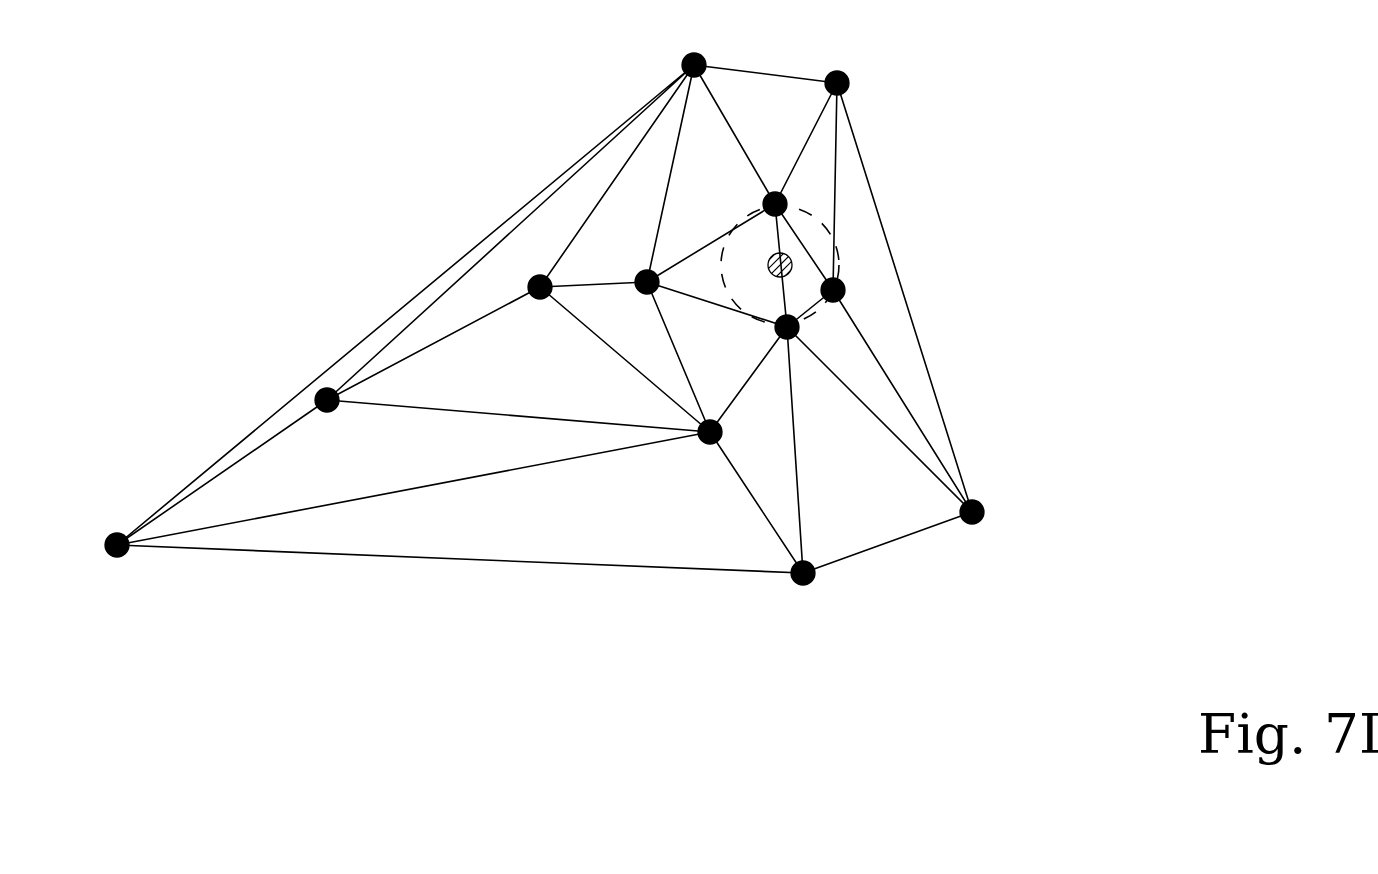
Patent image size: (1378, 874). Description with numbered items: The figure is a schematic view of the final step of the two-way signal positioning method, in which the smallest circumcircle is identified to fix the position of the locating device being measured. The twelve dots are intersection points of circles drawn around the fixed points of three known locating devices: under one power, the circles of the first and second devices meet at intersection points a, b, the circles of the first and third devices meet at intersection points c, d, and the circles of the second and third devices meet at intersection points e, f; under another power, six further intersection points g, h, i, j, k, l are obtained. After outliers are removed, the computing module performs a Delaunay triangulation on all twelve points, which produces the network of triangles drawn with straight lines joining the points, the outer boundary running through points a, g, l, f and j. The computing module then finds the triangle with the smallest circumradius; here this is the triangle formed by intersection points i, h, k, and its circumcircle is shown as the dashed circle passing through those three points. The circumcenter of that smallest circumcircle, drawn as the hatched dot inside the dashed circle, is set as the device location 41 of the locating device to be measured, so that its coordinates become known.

The intersection point a is at (697, 53).
The intersection point b is at (640, 272).
The intersection point c is at (530, 280).
The intersection point d is at (325, 412).
The intersection point e is at (722, 436).
The intersection point f is at (815, 576).
The intersection point g is at (849, 88).
The intersection point h is at (775, 328).
The intersection point i is at (775, 192).
The intersection point j is at (106, 540).
The intersection point k is at (844, 296).
The intersection point l is at (984, 516).
The device location 41 is at (792, 257).